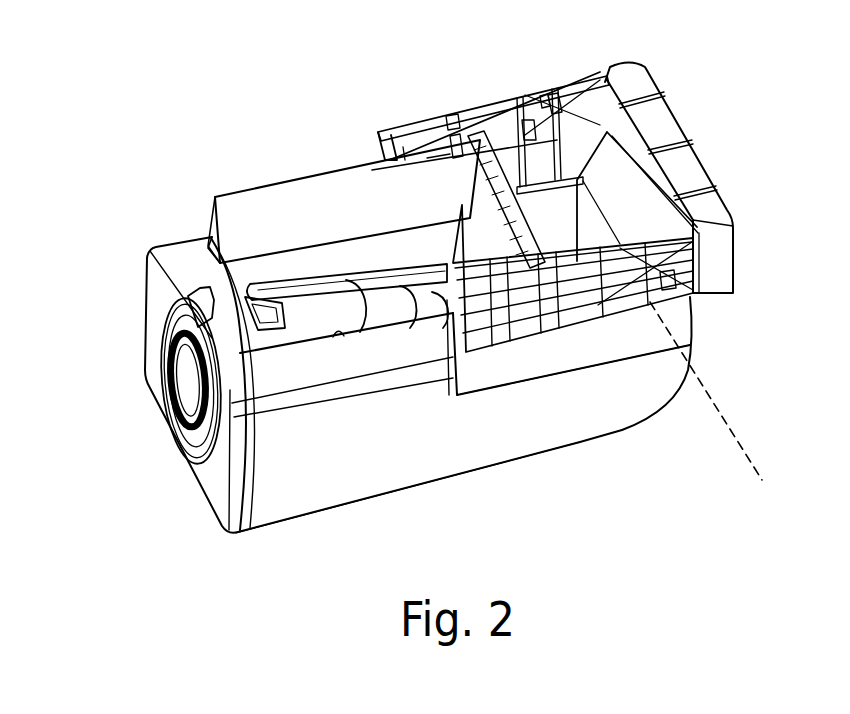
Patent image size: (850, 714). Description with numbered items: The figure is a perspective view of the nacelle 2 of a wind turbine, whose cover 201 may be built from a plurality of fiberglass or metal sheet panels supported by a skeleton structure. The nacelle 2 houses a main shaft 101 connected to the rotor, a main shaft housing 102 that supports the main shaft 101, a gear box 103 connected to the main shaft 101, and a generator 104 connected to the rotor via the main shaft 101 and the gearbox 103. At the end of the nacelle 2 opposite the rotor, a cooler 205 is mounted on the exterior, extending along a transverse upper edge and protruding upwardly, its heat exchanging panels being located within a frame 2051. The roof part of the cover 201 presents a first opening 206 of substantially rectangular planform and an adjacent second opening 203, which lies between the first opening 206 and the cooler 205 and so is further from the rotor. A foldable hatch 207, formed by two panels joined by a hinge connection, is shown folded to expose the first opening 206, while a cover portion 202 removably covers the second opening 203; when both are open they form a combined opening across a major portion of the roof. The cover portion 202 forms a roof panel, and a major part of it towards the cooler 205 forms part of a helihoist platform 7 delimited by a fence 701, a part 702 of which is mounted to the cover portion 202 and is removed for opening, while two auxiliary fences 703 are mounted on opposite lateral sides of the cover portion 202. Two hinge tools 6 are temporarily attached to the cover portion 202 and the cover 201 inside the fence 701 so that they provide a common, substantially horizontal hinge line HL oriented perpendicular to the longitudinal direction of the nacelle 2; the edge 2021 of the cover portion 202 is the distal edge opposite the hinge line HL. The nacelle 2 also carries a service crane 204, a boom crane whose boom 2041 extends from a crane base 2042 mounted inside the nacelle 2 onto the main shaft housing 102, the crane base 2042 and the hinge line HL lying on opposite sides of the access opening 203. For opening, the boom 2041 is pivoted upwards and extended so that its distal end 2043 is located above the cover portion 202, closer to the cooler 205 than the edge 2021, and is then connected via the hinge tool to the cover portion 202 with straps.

The nacelle 2 is at (226, 102).
The cover 201 is at (182, 248).
The cover portion 202 is at (575, 220).
The second opening 203 is at (552, 102).
The service crane 204 is at (297, 300).
The cooler 205 is at (700, 162).
The frame 2051 is at (660, 128).
The first opening 206 is at (343, 335).
The foldable hatch 207 is at (258, 222).
The edge of the cover portion 2021 is at (440, 136).
The boom 2041 is at (308, 273).
The crane base 2042 is at (265, 338).
The distal end of the boom 2043 is at (463, 260).
The hinge tool 6 is at (527, 133).
The helihoist platform 7 is at (620, 213).
The fence 701 is at (547, 98).
The part of the fence 702 is at (467, 257).
The auxiliary fence 703 is at (453, 118).
The main shaft 101 is at (191, 407).
The main shaft housing 102 is at (183, 392).
The gear box 103 is at (383, 317).
The generator 104 is at (422, 290).
The hinge line HL is at (722, 405).